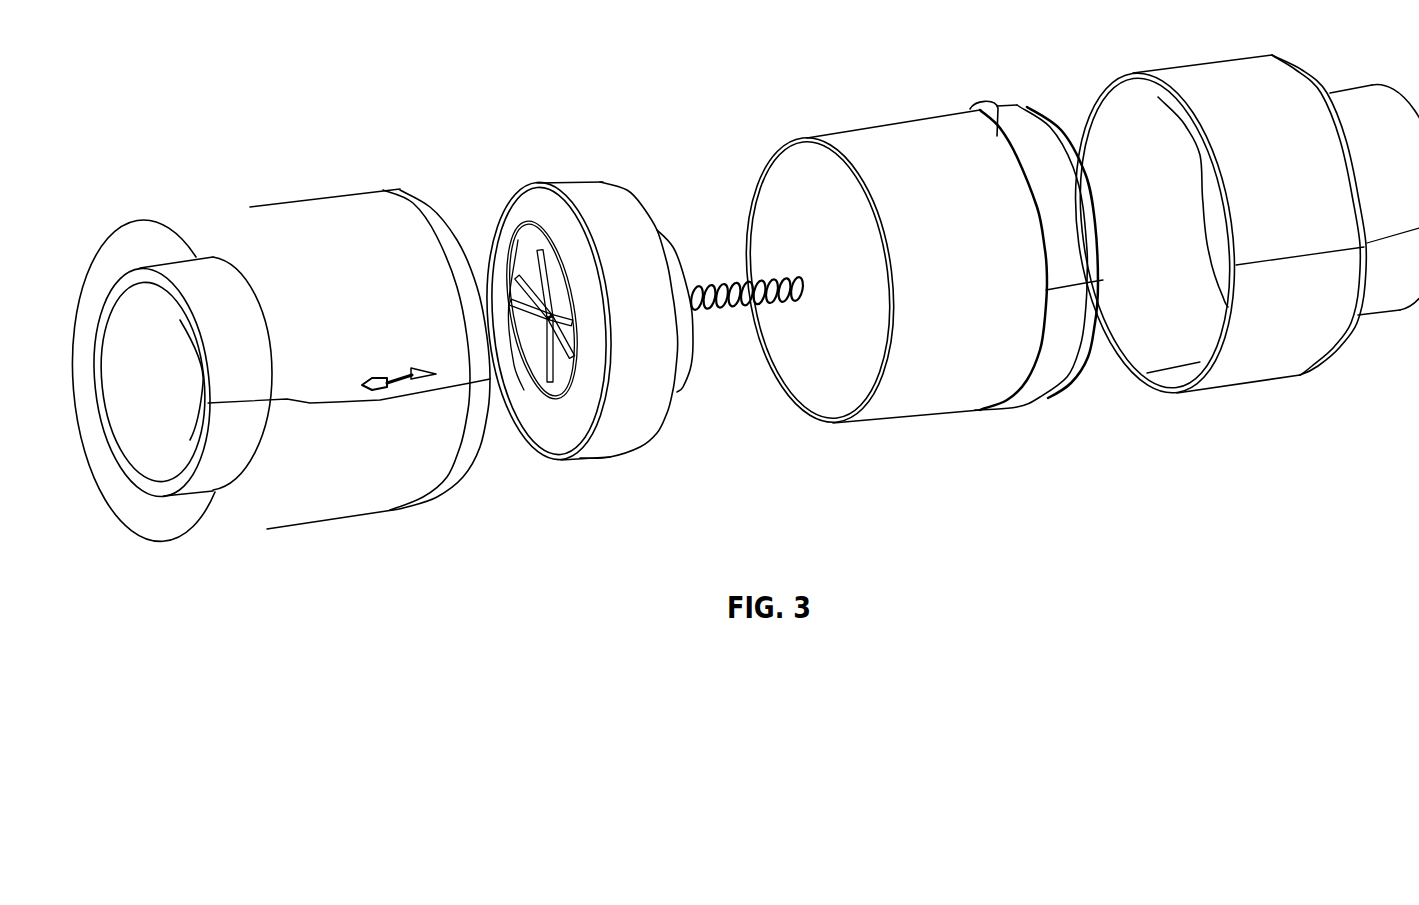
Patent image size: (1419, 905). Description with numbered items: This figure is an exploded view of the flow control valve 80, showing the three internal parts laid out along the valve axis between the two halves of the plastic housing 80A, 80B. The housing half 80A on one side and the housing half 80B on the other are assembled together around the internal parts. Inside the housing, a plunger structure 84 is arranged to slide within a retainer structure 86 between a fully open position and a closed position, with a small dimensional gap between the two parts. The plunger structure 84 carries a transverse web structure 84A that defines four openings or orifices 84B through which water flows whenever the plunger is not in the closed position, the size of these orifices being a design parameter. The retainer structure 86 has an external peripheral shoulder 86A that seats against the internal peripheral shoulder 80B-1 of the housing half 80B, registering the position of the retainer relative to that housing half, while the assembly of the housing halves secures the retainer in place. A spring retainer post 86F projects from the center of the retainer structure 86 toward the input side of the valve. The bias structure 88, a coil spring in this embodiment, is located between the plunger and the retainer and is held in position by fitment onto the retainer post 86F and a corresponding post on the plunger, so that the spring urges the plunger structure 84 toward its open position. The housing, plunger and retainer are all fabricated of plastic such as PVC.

The flow control valve 80 is at (586, 118).
The housing half 80A is at (293, 193).
The housing half 80B is at (1233, 53).
The internal peripheral shoulder 80B-1 is at (1127, 122).
The plunger structure 84 is at (571, 183).
The transverse web structure 84A is at (488, 283).
The openings or orifices 84B is at (538, 278).
The retainer structure 86 is at (877, 127).
The external peripheral shoulder 86A is at (1085, 345).
The spring retainer post 86F is at (992, 112).
The bias structure 88 is at (737, 307).